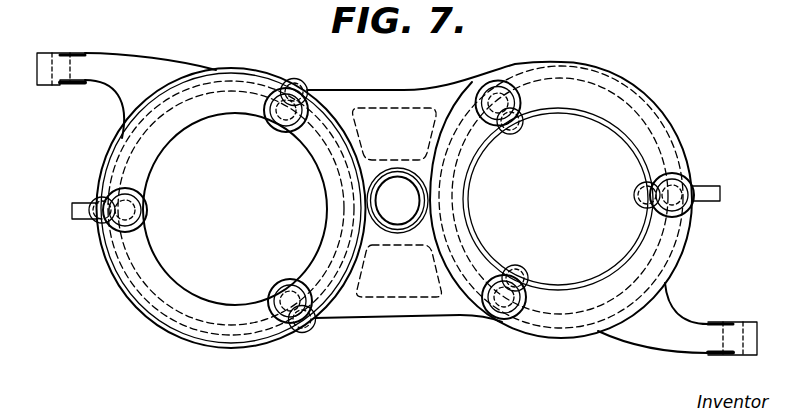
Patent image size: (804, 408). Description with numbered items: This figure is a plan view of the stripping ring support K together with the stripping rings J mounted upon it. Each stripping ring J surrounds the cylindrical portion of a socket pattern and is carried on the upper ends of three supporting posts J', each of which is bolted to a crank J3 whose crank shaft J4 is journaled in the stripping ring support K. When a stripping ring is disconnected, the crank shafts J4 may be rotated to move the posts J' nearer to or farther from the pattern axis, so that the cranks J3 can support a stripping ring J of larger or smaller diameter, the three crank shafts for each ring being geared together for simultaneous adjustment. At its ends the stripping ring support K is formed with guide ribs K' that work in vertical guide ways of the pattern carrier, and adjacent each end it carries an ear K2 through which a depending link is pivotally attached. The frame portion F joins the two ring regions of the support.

The stripping ring J is at (395, 205).
The supporting post J' is at (360, 209).
The crank J3 is at (142, 227).
The crank shaft J4 is at (135, 208).
The stripping ring support K is at (434, 75).
The guide rib K' is at (404, 181).
The ear K2 is at (100, 59).
The frame connecting the rings F is at (377, 318).